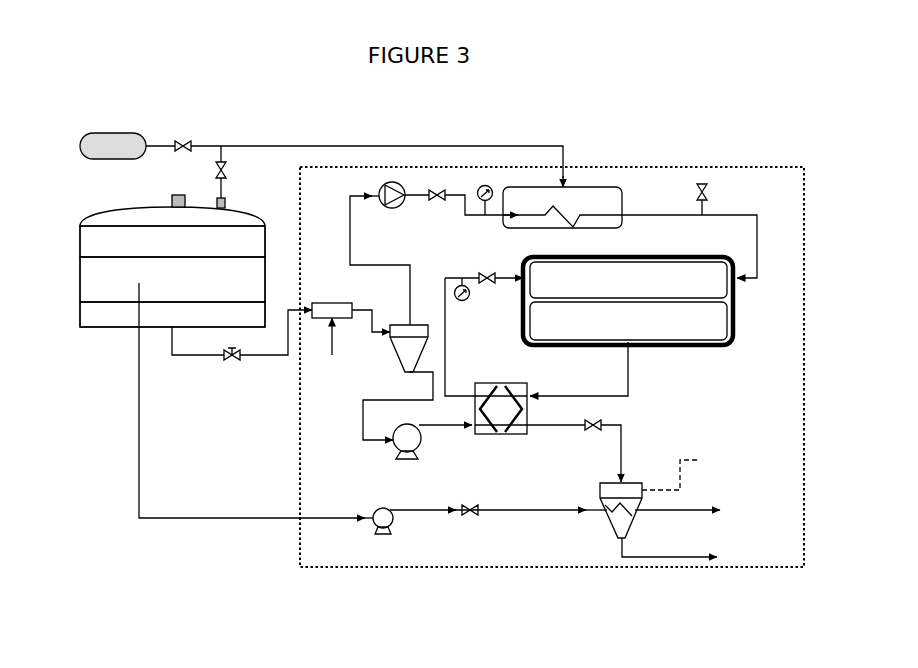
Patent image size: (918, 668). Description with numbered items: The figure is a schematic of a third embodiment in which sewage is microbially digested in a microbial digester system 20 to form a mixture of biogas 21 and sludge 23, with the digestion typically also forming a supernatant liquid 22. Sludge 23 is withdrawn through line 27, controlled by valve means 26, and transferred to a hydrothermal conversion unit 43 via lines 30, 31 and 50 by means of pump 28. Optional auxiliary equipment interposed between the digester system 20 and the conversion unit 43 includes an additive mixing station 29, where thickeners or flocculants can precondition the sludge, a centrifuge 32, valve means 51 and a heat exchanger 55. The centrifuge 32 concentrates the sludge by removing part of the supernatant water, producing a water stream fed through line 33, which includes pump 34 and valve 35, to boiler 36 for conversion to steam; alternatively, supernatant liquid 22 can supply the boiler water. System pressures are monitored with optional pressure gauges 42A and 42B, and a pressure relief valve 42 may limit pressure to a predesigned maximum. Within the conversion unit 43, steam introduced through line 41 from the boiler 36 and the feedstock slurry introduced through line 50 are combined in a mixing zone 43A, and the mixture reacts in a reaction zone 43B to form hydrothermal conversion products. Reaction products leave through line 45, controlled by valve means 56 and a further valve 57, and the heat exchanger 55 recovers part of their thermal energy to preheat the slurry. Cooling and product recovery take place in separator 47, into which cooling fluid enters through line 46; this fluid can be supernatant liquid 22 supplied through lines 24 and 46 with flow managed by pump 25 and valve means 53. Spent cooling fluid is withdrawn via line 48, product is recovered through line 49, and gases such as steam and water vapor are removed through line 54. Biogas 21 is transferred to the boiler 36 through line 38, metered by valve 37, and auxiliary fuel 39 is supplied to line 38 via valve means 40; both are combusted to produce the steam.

The microbial digester system 20 is at (72, 342).
The biogas 21 is at (172, 241).
The supernatant liquid 22 is at (172, 279).
The sludge 23 is at (172, 314).
The line 24 is at (136, 461).
The pump 25 is at (387, 527).
The valve means 26 is at (230, 361).
The line 27 is at (280, 357).
The pump 28 is at (395, 443).
The additive mixing station 29 is at (326, 300).
The line 30 is at (371, 335).
The line 31 is at (360, 415).
The centrifuge 32 is at (409, 348).
The line 33 is at (358, 263).
The pump 34 is at (394, 192).
The valve 35 is at (439, 189).
The boiler 36 is at (562, 207).
The valve 37 is at (227, 175).
The line 38 is at (290, 137).
The auxiliary fuel 39 is at (113, 146).
The valve means 40 is at (189, 140).
The line 41 is at (759, 249).
The relief valve 42 is at (705, 188).
The pressure gauge 42A is at (470, 299).
The pressure gauge 42B is at (488, 187).
The hydrothermal conversion unit 43 is at (758, 312).
The mixing zone 43A is at (628, 280).
The reaction zone 43B is at (628, 321).
The line 45 is at (632, 374).
The line 46 is at (563, 513).
The separator 47 is at (621, 510).
The line 48 is at (722, 507).
The line 49 is at (700, 557).
The line 50 is at (448, 358).
The valve means 51 is at (489, 274).
The valve means 53 is at (475, 515).
The line 54 is at (702, 460).
The heat exchanger 55 is at (501, 408).
The valve means 56 is at (592, 429).
The valve 57 is at (625, 447).